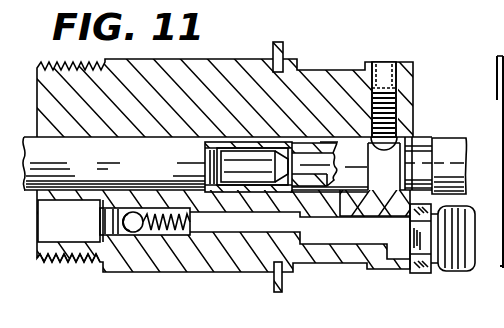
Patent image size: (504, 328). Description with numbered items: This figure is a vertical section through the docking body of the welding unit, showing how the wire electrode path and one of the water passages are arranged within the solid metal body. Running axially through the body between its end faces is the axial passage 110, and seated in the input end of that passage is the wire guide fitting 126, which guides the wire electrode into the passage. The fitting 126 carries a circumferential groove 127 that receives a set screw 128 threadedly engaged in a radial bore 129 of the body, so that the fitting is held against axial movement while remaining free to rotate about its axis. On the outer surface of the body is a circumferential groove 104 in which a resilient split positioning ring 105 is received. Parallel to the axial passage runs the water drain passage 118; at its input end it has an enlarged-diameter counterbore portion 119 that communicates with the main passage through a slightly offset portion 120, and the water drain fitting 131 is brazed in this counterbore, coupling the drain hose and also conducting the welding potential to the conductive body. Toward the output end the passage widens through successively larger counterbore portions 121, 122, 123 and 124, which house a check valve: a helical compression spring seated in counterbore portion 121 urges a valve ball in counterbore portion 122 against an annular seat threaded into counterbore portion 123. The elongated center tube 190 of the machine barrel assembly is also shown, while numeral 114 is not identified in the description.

The circumferential groove 104 is at (262, 52).
The resilient split positioning ring 105 is at (285, 46).
The set screw 128 is at (352, 92).
The radial bore 129 is at (390, 66).
The housing 114 is at (497, 99).
The wire guide fitting 126 is at (460, 141).
The axial bore or passage 110 is at (503, 146).
The counterbore portion 123 is at (124, 168).
The center tube 190 is at (84, 169).
The counterbore portion 124 is at (78, 232).
The counterbore portion 122 is at (146, 240).
The counterbore portion 121 is at (167, 232).
The water drain passage 118 is at (228, 244).
The offset portion 120 is at (322, 250).
The counterbore portion 119 is at (402, 258).
The water drain fitting 131 is at (446, 268).
The circumferential groove 127 is at (340, 214).